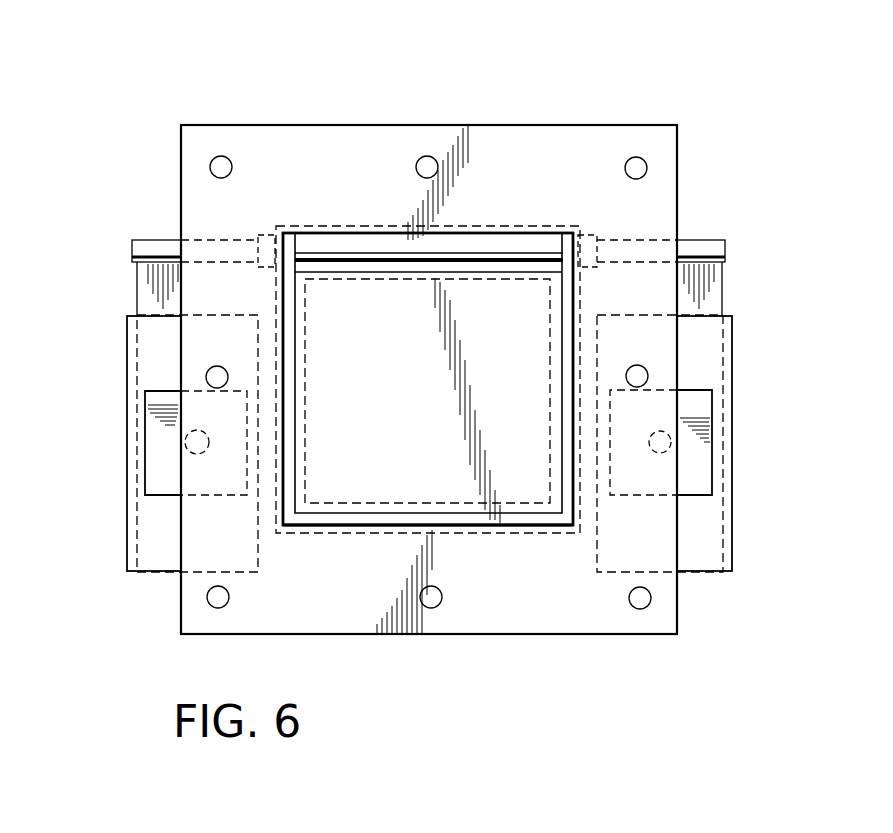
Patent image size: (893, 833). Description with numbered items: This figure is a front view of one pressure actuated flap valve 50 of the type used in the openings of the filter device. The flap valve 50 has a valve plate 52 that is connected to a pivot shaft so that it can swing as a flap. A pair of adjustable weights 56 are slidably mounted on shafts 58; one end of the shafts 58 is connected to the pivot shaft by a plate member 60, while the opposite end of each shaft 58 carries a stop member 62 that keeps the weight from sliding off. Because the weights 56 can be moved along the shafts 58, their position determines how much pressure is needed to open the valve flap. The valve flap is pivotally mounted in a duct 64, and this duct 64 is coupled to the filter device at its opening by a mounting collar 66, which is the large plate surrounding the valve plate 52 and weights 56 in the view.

The pressure actuated flap valve 50 is at (555, 108).
The valve plate 52 is at (412, 405).
The adjustable weight 56 is at (127, 362).
The shaft 58 is at (692, 240).
The plate member 60 is at (135, 290).
The stop member 62 is at (148, 455).
The duct 64 is at (525, 533).
The mounting collar 66 is at (181, 180).